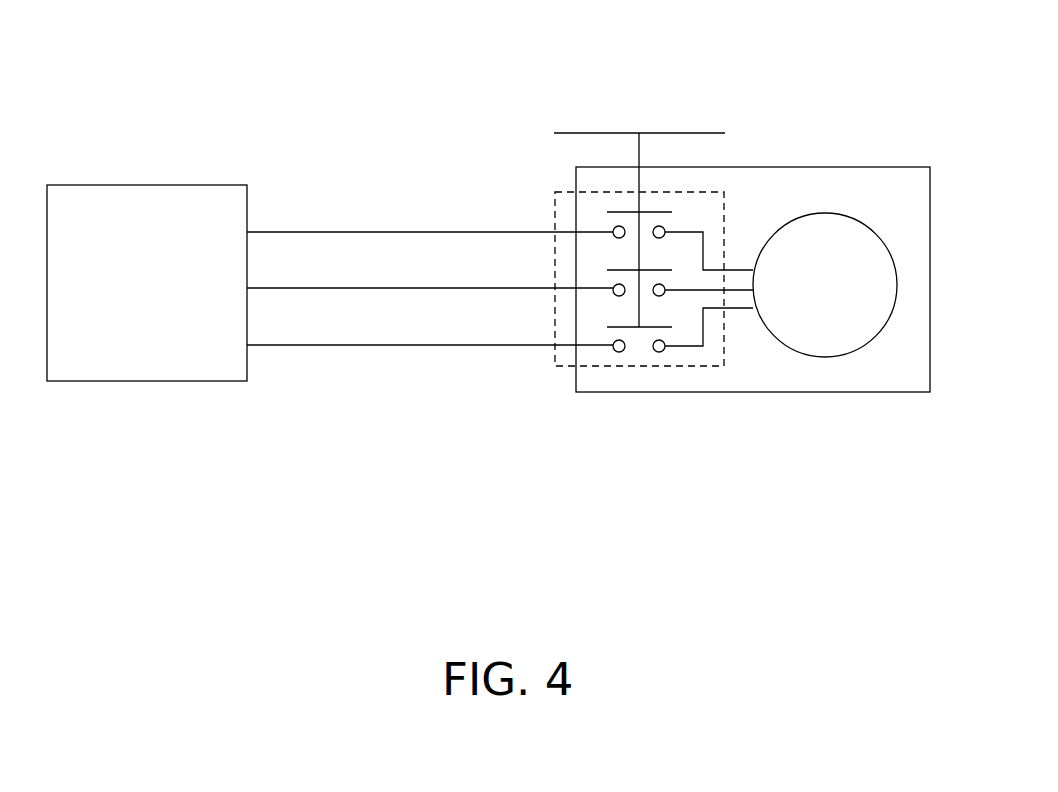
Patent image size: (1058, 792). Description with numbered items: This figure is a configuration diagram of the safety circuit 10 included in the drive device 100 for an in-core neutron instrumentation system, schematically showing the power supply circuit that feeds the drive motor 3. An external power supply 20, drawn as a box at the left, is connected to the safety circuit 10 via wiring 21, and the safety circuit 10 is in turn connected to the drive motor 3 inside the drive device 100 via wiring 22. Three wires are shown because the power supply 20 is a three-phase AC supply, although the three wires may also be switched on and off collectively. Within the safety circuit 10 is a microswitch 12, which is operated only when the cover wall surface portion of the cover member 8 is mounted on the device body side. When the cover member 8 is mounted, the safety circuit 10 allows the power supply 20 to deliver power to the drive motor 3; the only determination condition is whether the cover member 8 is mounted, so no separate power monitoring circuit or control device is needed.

The drive motor 3 is at (825, 357).
The cover member 8 is at (666, 133).
The safety circuit 10 is at (664, 366).
The microswitch 12 is at (615, 352).
The power supply 20 is at (145, 381).
The wiring 21 is at (365, 345).
The wiring 22 is at (741, 308).
The drive device 100 is at (890, 392).